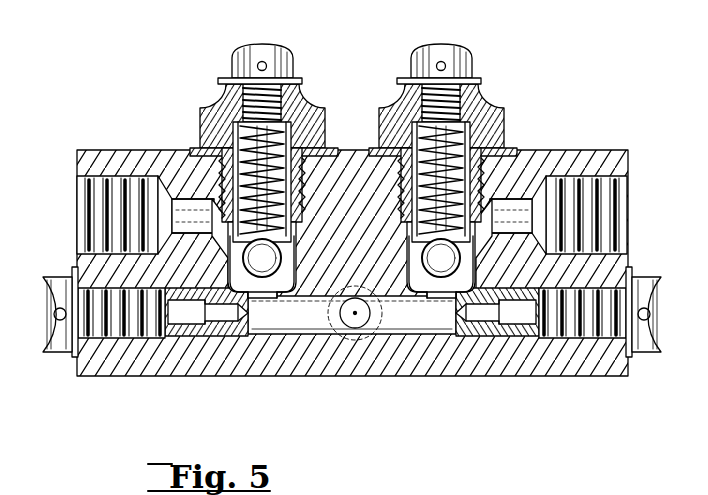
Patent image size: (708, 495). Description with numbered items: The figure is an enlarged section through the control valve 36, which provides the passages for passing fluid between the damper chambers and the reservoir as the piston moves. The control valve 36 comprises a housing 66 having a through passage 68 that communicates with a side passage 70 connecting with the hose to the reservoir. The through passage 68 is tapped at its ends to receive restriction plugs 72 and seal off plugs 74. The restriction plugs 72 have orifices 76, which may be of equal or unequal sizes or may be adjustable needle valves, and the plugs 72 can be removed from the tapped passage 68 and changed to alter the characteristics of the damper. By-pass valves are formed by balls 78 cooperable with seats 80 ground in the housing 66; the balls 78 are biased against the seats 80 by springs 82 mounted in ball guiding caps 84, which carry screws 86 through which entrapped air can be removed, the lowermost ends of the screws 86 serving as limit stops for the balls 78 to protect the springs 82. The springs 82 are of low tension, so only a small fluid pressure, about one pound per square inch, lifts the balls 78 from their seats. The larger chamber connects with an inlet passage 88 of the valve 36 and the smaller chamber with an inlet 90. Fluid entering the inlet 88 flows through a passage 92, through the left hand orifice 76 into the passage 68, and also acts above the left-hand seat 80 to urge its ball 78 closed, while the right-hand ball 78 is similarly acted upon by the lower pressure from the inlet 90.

The control valve 36 is at (127, 409).
The housing 66 is at (308, 322).
The through passage 68 is at (428, 328).
The side passage 70 is at (356, 318).
The restriction plugs 72 is at (182, 340).
The seal off plugs 74 is at (44, 346).
The orifices 76 is at (250, 317).
The balls 78 is at (272, 266).
The seats 80 is at (290, 282).
The springs 82 is at (292, 220).
The ball guiding caps 84 is at (378, 110).
The screws 86 is at (411, 54).
The inlet passage 88 is at (79, 194).
The inlet 90 is at (626, 216).
The passage 92 is at (200, 273).